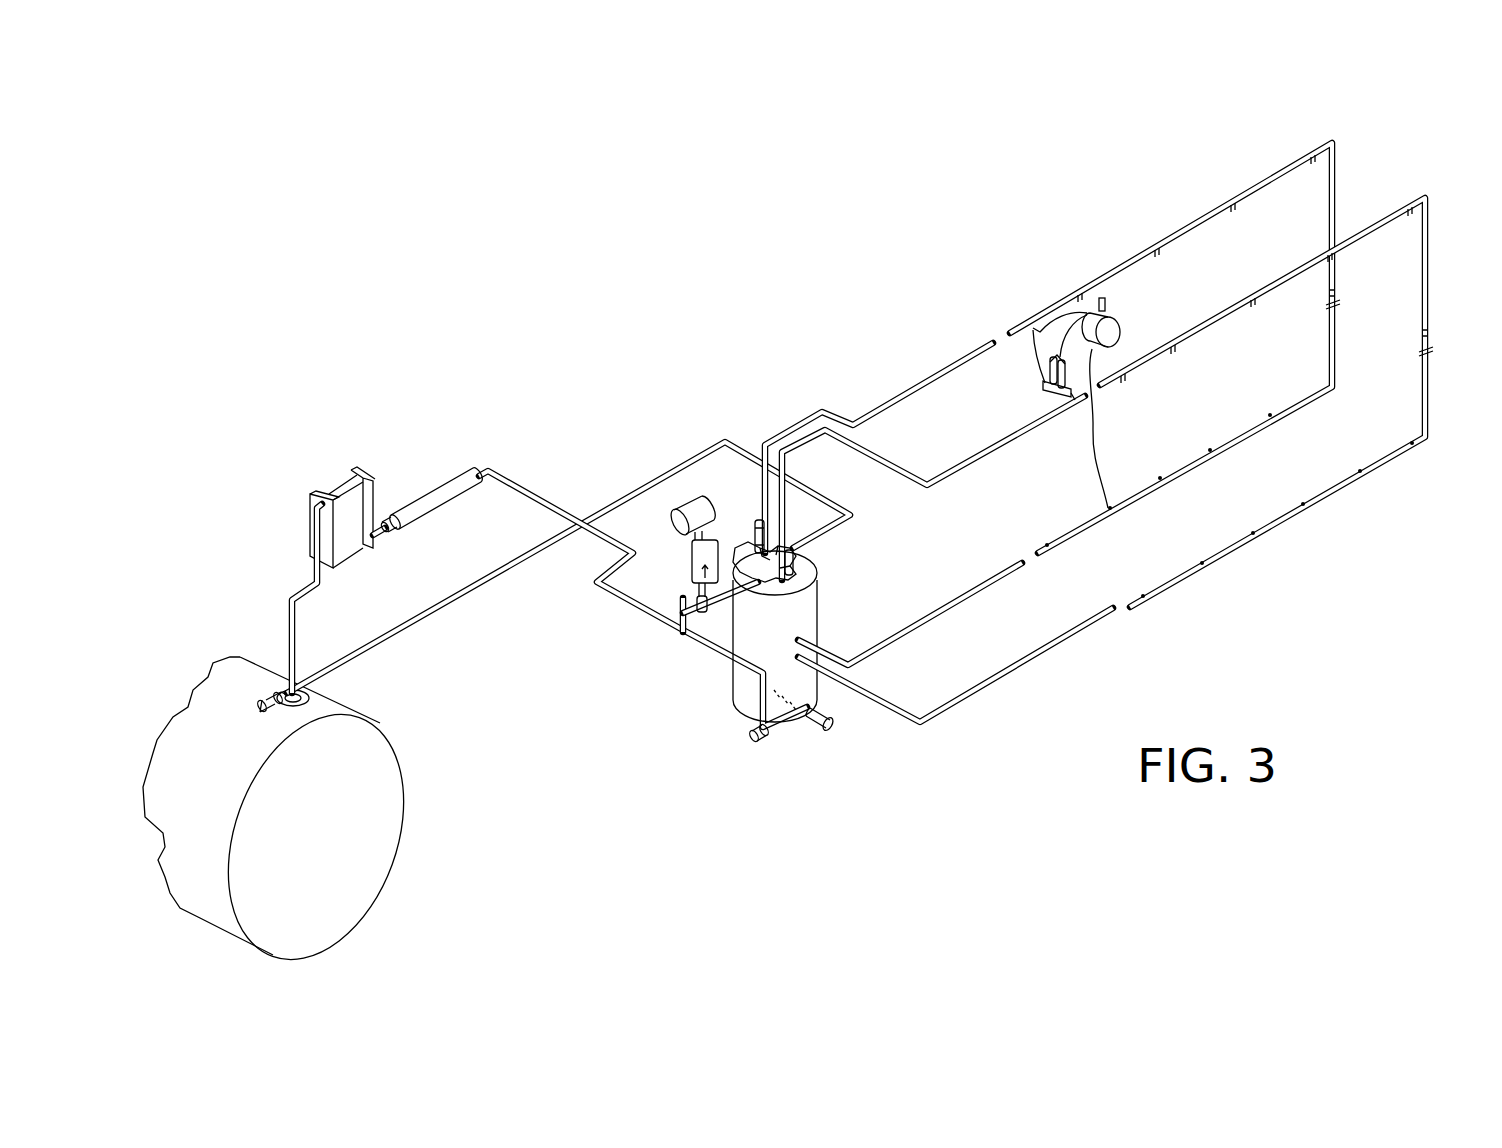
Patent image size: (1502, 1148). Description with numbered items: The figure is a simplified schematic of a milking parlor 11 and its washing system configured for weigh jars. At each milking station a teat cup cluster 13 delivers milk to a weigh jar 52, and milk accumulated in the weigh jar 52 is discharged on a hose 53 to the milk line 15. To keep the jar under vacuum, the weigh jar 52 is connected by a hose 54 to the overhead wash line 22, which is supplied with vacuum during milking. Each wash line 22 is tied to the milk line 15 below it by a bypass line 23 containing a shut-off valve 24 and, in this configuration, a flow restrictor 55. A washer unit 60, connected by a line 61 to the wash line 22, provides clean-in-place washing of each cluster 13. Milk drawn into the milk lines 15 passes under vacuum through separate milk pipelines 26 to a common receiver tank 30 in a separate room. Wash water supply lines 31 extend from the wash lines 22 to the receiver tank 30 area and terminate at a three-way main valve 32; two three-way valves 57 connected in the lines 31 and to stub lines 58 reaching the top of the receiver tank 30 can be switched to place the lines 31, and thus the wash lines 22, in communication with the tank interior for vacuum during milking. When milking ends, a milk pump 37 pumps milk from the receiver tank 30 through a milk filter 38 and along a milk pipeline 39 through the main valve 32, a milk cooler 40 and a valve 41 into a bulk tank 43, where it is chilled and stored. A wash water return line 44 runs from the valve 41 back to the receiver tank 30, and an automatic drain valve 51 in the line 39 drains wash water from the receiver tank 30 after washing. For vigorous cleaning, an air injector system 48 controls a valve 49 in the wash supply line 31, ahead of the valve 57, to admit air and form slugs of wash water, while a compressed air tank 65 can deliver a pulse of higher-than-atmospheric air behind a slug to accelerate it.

The milking parlor 11 is at (1405, 153).
The teat cup cluster 13 is at (1072, 402).
The milk line 15 is at (1075, 535).
The wash line 22 is at (1140, 250).
The bypass line 23 is at (1330, 340).
The shut-off valve 24 is at (1328, 303).
The milk pipeline 26 is at (825, 648).
The receiver tank 30 is at (812, 615).
The wash water supply line 31 is at (800, 413).
The main valve 32 is at (680, 613).
The milk pump 37 is at (831, 730).
The milk filter 38 is at (415, 497).
The milk pipeline 39 is at (533, 490).
The milk cooler 40 is at (308, 505).
The valve 41 is at (258, 715).
The bulk tank 43 is at (392, 835).
The wash water return line 44 is at (825, 495).
The air injector system 48 is at (690, 566).
The valve 49 is at (702, 622).
The automatic drain valve 51 is at (753, 742).
The weigh jar 52 is at (1112, 316).
The hose 53 is at (1105, 455).
The hose 54 is at (1055, 318).
The flow restrictor 55 is at (1336, 287).
The three-way valve 57 is at (755, 520).
The stub line 58 is at (805, 572).
The washer unit 60 is at (1045, 391).
The line 61 is at (1030, 352).
The compressed air tank 65 is at (693, 498).